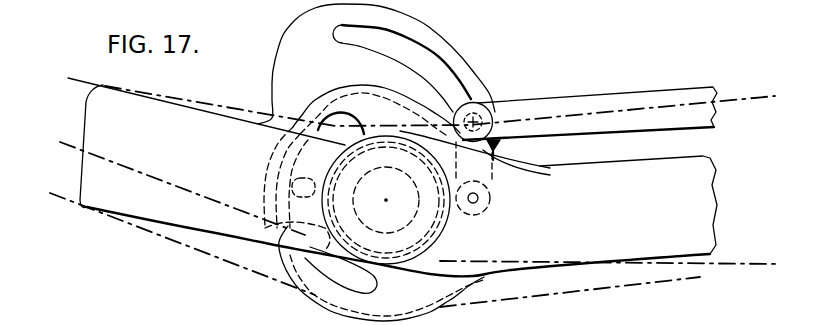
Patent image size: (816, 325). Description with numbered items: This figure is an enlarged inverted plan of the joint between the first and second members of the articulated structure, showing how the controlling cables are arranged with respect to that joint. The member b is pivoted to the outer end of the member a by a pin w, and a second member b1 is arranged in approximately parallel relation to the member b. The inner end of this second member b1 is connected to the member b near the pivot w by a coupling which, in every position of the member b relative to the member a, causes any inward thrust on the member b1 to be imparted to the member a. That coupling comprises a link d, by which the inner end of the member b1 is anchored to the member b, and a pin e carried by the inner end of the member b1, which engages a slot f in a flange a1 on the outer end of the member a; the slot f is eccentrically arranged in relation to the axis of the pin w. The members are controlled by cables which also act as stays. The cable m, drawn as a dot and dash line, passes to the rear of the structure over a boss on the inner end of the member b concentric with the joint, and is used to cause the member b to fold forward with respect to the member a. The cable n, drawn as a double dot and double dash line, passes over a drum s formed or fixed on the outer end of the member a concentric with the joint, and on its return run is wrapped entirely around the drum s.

The member a is at (216, 143).
The flange a1 is at (376, 162).
The member b is at (402, 203).
The second member b1 is at (615, 96).
The link d is at (498, 147).
The pin e is at (497, 100).
The slot f is at (425, 63).
The cable m is at (143, 230).
The cable n is at (229, 107).
The drum s is at (333, 260).
The pin w is at (314, 288).